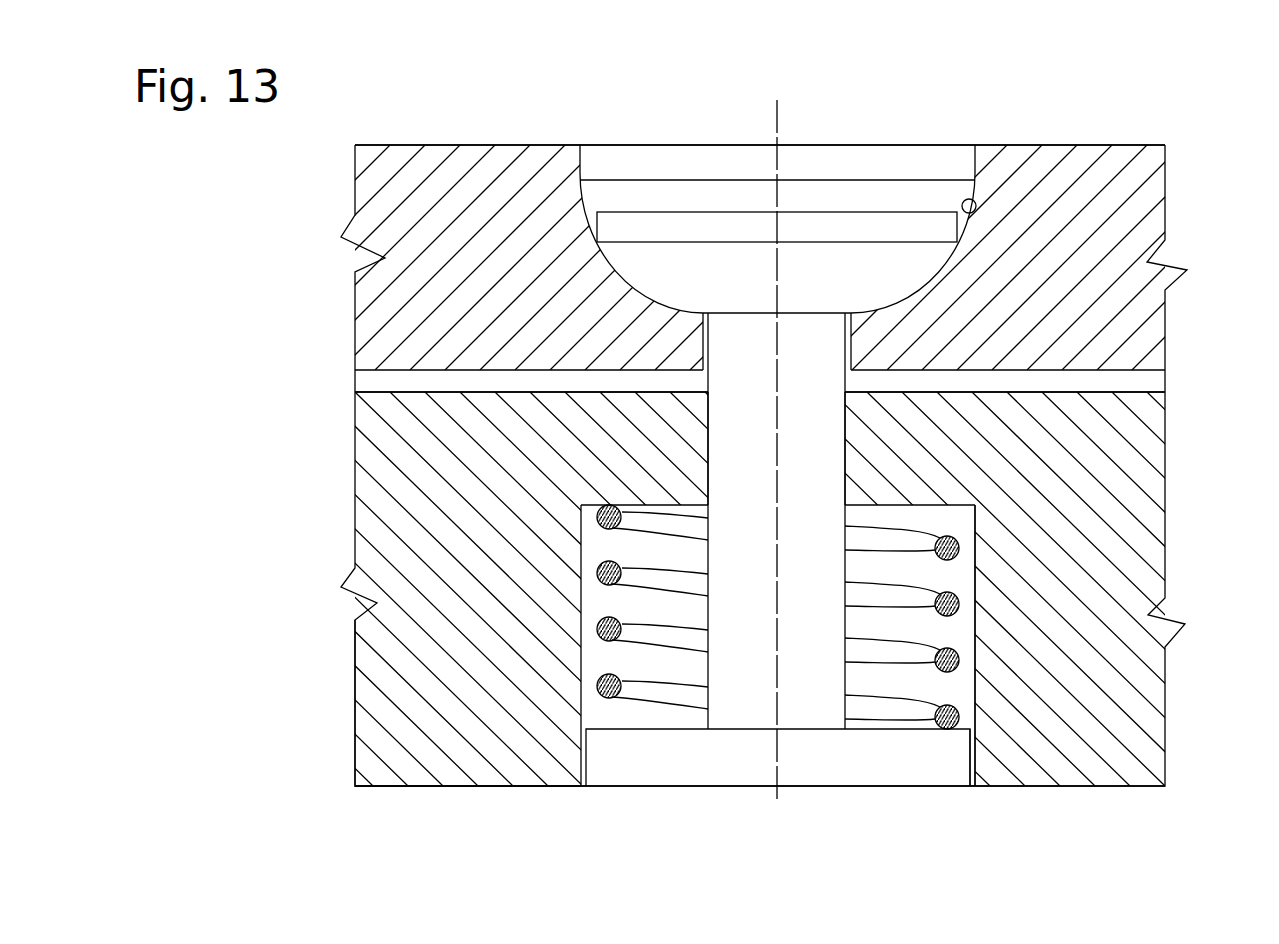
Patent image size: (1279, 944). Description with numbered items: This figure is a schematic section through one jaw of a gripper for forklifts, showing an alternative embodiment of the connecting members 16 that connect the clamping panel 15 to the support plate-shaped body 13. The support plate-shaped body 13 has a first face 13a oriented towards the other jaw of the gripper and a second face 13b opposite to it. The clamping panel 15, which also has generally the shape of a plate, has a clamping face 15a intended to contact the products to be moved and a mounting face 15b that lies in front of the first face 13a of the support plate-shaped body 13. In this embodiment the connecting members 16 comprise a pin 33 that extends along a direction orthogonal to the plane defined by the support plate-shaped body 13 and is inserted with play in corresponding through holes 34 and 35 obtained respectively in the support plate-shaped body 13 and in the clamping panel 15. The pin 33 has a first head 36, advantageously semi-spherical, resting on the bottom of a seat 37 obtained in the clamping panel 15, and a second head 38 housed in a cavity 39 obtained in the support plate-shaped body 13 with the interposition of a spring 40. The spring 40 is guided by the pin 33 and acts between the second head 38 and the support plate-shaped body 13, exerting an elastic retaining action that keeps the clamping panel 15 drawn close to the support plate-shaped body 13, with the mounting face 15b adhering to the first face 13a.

The support plate-shaped body 13 is at (1158, 626).
The first face 13a is at (1165, 372).
The second face 13b is at (1145, 788).
The clamping panel 15 is at (1127, 215).
The clamping face 15a is at (410, 145).
The mounting face 15b is at (362, 372).
The connecting members 16 is at (470, 727).
The pin 33 is at (740, 700).
The through hole 34 is at (845, 448).
The through hole 35 is at (703, 333).
The first head 36 is at (890, 278).
The seat 37 is at (976, 195).
The second head 38 is at (853, 763).
The cavity 39 is at (970, 690).
The spring 40 is at (650, 692).